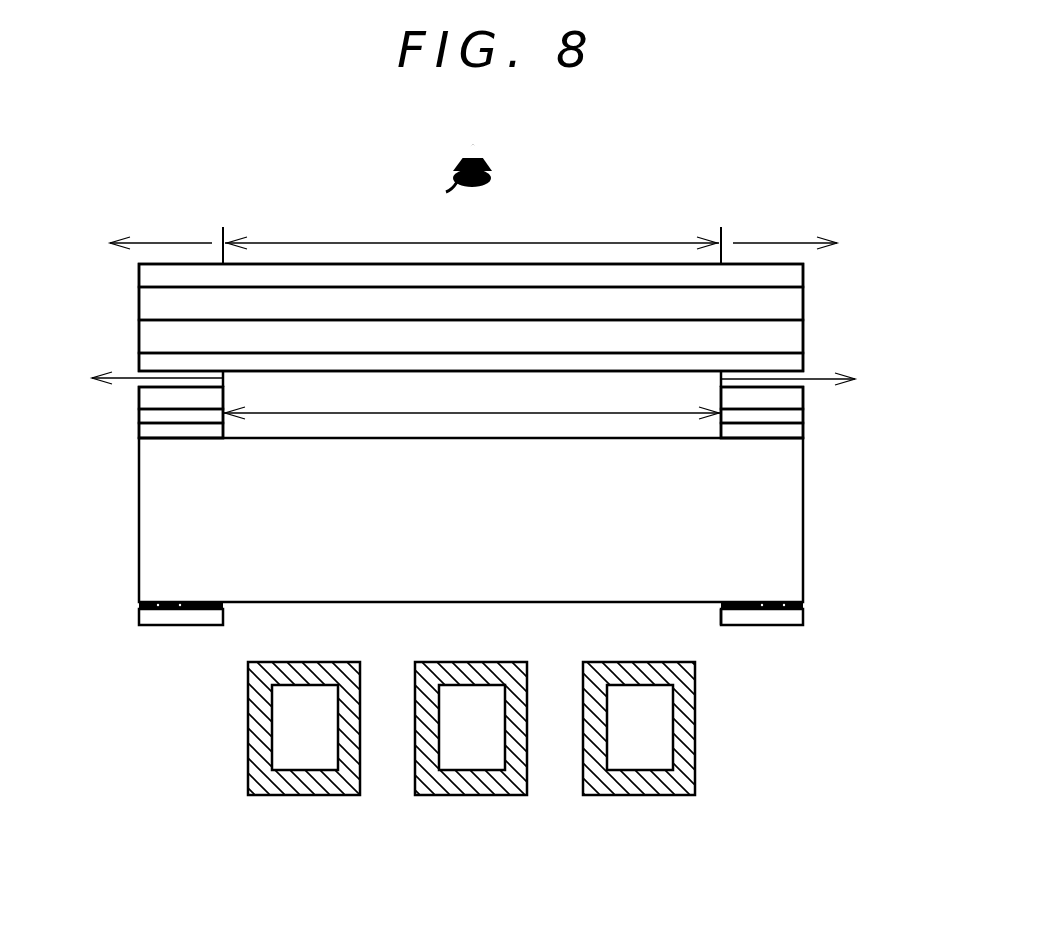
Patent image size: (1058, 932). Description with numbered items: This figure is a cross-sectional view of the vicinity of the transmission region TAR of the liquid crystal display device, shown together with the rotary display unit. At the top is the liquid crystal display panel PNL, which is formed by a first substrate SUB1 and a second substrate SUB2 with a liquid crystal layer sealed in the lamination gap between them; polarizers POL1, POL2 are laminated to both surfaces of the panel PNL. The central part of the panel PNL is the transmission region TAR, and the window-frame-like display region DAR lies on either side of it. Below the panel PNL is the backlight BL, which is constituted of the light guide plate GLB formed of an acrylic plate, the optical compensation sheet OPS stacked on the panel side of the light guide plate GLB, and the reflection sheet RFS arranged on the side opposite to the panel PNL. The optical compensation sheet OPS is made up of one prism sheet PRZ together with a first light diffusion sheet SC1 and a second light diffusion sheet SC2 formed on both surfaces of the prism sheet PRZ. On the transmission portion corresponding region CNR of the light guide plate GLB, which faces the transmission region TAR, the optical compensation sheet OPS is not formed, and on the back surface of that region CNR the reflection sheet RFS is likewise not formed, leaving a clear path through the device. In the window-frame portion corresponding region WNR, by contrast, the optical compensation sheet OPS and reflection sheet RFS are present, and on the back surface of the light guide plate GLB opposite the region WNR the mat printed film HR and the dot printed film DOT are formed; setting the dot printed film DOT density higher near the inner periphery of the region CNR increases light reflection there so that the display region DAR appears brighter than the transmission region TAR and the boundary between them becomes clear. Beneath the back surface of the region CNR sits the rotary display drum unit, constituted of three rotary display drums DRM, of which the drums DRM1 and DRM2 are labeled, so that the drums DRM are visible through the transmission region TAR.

The display region DAR is at (472, 245).
The transmission region TAR is at (578, 243).
The liquid crystal display panel PNL is at (127, 265).
The polarizer POL2 is at (798, 277).
The second substrate SUB2 is at (798, 303).
The first substrate SUB1 is at (798, 340).
The polarizer POL1 is at (798, 362).
The window-frame portion corresponding region WNR is at (478, 381).
The transmission portion corresponding region CNR is at (472, 402).
The optical compensation sheet OPS is at (888, 401).
The second light diffusion sheet SC2 is at (798, 396).
The prism sheet PRZ is at (798, 416).
The first light diffusion sheet SC1 is at (798, 432).
The backlight BL is at (127, 390).
The light guide plate GLB is at (794, 512).
The dot printed film DOT is at (772, 600).
The reflection sheet RFS is at (797, 616).
The mat printed film HR is at (740, 610).
The rotary display drum DRM1 is at (471, 745).
The rotary display drum DRM2 is at (471, 745).
The rotary display drum DRM is at (469, 777).